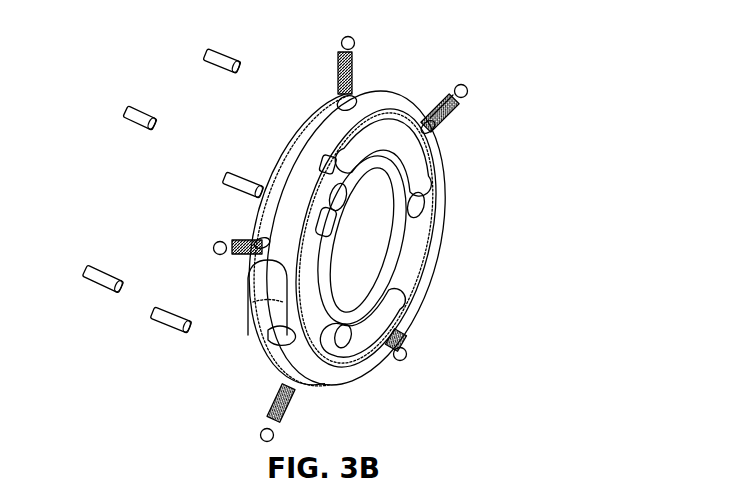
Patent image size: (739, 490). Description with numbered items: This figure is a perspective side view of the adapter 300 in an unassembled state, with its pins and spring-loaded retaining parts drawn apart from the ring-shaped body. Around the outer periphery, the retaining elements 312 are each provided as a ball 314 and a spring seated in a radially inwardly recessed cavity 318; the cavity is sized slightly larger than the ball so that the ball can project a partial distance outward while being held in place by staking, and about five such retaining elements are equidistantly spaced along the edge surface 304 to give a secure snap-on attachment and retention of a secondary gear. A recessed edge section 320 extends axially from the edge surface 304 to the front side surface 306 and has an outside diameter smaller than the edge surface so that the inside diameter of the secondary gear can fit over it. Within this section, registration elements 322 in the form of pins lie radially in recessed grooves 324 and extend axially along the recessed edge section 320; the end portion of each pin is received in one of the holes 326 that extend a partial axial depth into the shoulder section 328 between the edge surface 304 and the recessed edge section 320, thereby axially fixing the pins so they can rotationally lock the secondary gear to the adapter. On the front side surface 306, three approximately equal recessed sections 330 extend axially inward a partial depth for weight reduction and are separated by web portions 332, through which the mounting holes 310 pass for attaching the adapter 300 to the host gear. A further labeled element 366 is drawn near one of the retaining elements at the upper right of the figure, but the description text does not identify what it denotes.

The adapter 300 is at (473, 57).
The edge surface 304 is at (258, 322).
The front side surface 306 is at (433, 188).
The mounting holes 310 is at (430, 200).
The retaining elements 312 is at (438, 98).
The ball 314 is at (468, 89).
The radially inwardly recessed cavity 318 is at (340, 96).
The recessed edge section 320 is at (250, 298).
The registration elements 322 is at (226, 188).
The recessed grooves 324 is at (320, 165).
The holes 326 is at (268, 345).
The shoulder section 328 is at (250, 262).
The recessed sections 330 is at (405, 152).
The web portions 332 is at (333, 372).
The threaded post 366 is at (452, 100).